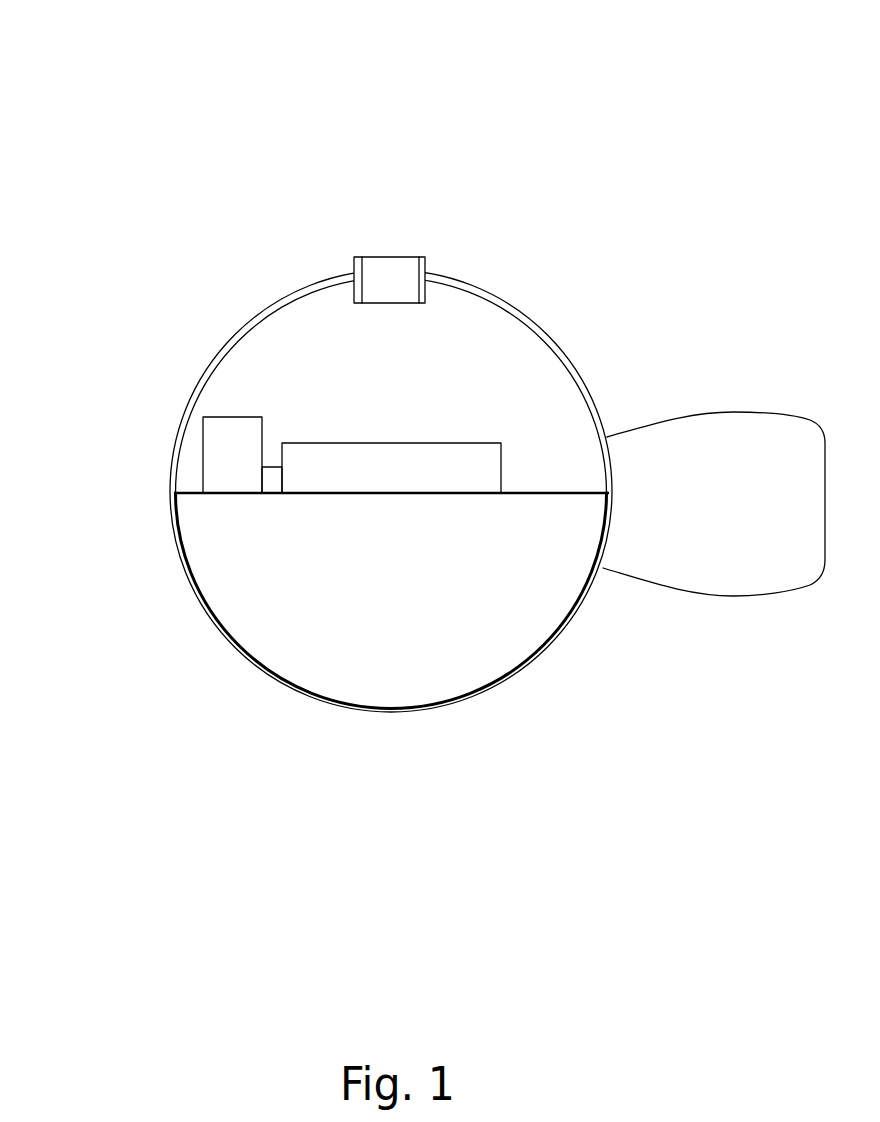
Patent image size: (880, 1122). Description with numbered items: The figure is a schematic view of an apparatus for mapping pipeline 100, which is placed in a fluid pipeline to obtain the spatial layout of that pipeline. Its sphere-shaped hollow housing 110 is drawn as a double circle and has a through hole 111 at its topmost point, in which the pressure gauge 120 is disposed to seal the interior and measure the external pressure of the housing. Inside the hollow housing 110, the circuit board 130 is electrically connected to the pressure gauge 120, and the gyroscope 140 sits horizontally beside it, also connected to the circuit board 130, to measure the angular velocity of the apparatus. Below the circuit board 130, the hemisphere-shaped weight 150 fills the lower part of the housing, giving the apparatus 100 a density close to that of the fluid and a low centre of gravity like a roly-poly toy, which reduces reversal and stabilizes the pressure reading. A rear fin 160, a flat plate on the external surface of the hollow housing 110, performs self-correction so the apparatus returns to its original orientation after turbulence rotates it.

The apparatus for mapping pipeline 100 is at (650, 118).
The hollow housing 110 is at (572, 360).
The through hole 111 is at (407, 252).
The pressure gauge 120 is at (372, 270).
The circuit board 130 is at (316, 452).
The gyroscope 140 is at (232, 453).
The weight 150 is at (488, 625).
The rear fin 160 is at (763, 428).